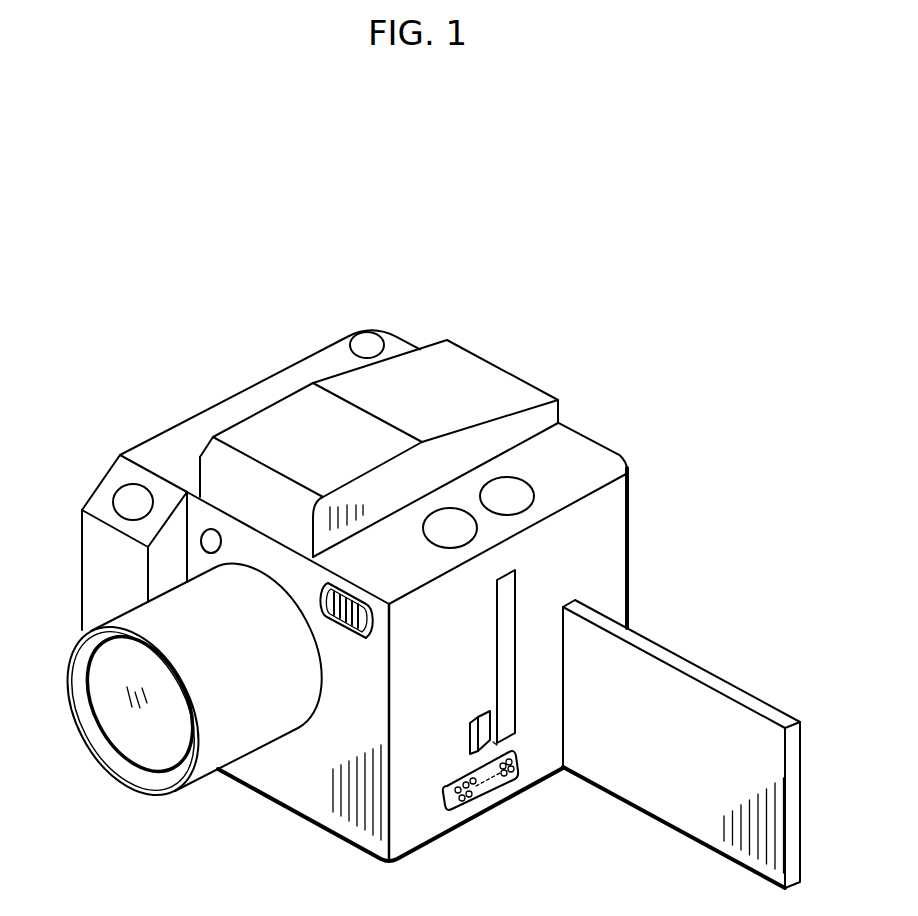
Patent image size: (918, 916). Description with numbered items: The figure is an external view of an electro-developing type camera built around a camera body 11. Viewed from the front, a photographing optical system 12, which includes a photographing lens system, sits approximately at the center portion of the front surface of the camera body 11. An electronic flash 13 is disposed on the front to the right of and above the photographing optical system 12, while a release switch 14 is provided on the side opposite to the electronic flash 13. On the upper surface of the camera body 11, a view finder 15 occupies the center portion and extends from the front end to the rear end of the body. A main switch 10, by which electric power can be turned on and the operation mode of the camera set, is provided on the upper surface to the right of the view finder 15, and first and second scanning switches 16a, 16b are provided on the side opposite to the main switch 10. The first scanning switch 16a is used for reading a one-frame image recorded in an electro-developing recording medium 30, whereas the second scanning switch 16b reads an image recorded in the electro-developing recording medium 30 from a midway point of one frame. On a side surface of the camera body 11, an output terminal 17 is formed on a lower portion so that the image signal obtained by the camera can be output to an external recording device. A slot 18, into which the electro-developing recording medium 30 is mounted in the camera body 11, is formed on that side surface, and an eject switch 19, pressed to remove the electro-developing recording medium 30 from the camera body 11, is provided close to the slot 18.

The main switch 10 is at (369, 345).
The camera body 11 is at (307, 829).
The photographing optical system 12 is at (150, 740).
The electronic flash 13 is at (347, 638).
The release switch 14 is at (132, 502).
The view finder 15 is at (285, 427).
The first scanning switch 16a is at (450, 528).
The second scanning switch 16b is at (507, 497).
The output terminal 17 is at (473, 800).
The slot 18 is at (507, 700).
The eject switch 19 is at (470, 735).
The electro-developing recording medium 30 is at (677, 807).